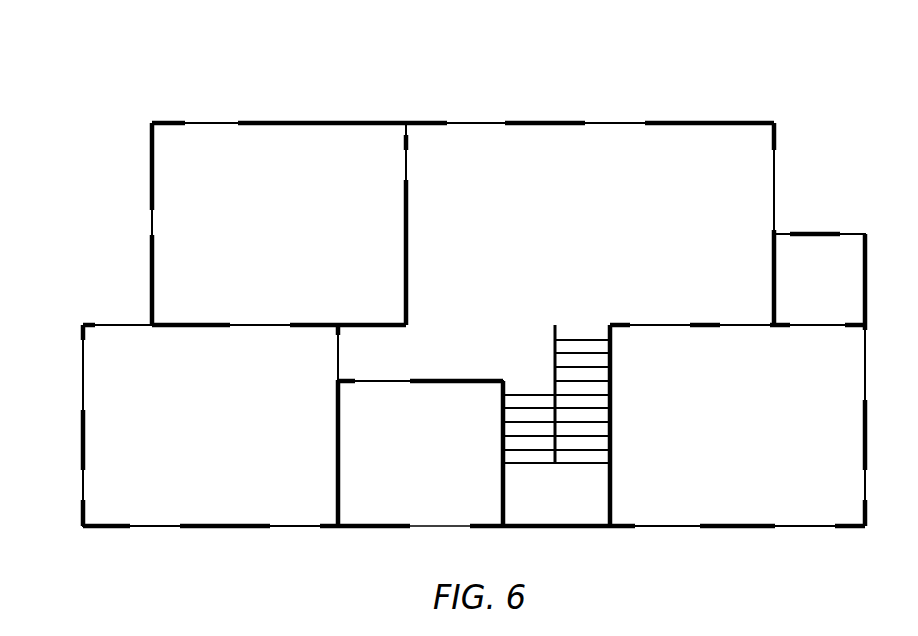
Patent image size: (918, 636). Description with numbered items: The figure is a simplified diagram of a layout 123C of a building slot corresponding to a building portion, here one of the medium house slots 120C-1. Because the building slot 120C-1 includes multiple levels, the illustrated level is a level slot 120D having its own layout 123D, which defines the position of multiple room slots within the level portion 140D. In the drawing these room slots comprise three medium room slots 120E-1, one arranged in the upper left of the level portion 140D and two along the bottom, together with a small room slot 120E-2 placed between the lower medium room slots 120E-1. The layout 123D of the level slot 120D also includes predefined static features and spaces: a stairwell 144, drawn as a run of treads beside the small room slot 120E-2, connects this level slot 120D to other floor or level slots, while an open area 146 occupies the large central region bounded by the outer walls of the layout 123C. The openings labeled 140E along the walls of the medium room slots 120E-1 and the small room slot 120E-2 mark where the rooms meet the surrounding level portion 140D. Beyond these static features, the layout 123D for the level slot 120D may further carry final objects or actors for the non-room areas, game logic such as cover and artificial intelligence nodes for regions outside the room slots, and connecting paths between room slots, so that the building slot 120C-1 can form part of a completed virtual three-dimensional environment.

The medium house slot 120C-1 is at (168, 76).
The layout 123C is at (326, 106).
The level slot 120D is at (749, 56).
The layout 123D is at (754, 106).
The level portion 140D is at (548, 122).
The open area 146 is at (724, 189).
The stairwell 144 is at (583, 341).
The medium room slot 120E-1 is at (175, 170).
The small room slot 120E-2 is at (372, 510).
The door of room 140E is at (165, 225).